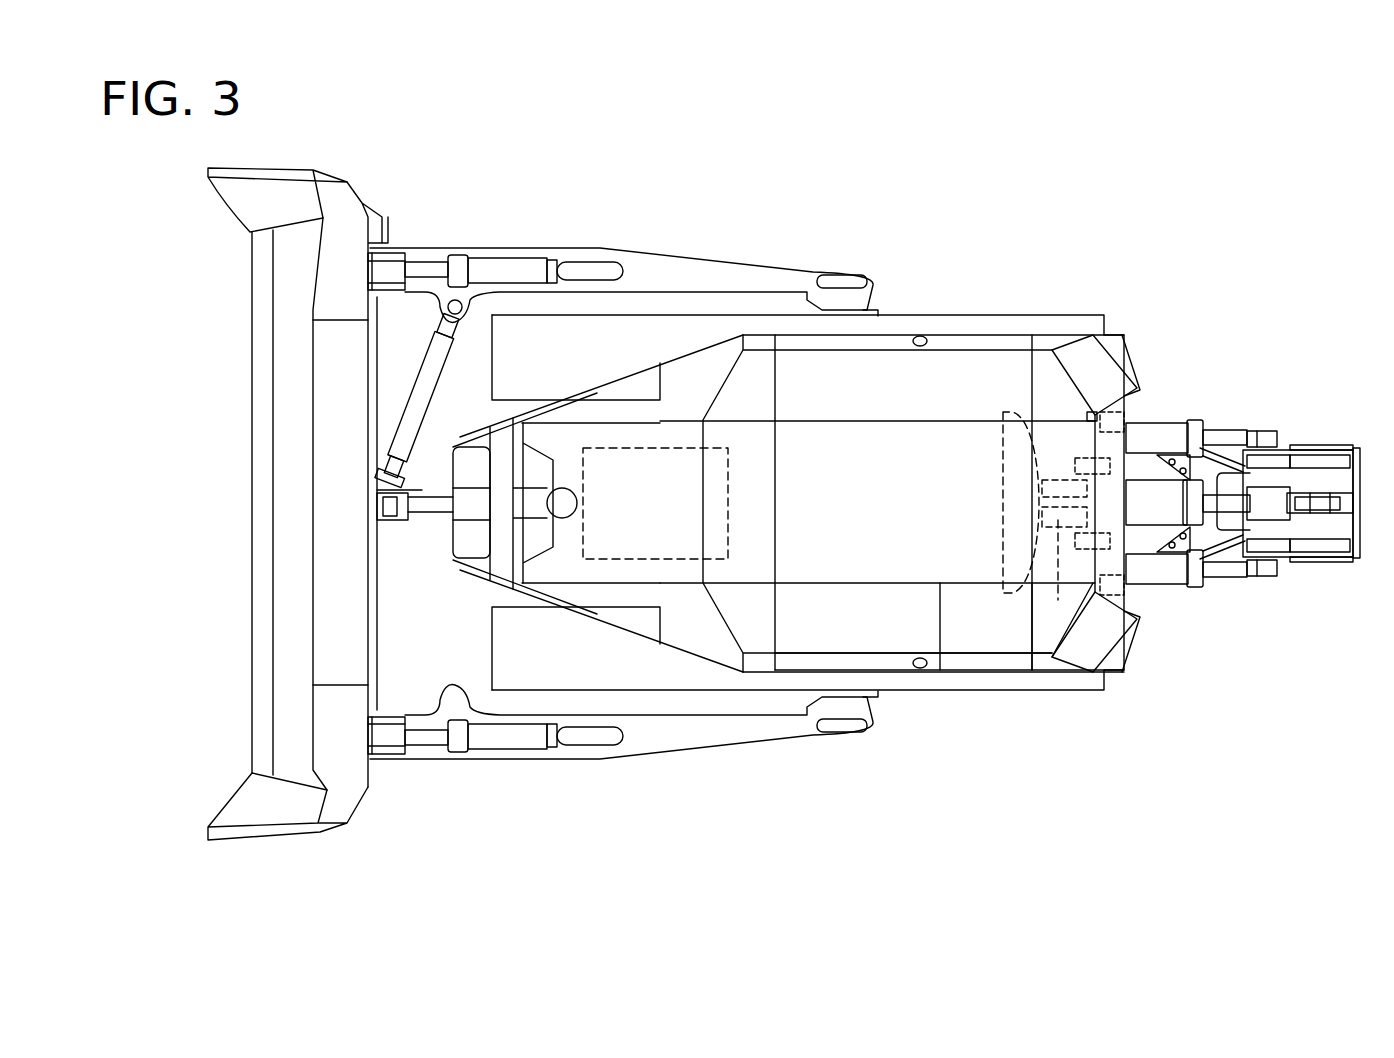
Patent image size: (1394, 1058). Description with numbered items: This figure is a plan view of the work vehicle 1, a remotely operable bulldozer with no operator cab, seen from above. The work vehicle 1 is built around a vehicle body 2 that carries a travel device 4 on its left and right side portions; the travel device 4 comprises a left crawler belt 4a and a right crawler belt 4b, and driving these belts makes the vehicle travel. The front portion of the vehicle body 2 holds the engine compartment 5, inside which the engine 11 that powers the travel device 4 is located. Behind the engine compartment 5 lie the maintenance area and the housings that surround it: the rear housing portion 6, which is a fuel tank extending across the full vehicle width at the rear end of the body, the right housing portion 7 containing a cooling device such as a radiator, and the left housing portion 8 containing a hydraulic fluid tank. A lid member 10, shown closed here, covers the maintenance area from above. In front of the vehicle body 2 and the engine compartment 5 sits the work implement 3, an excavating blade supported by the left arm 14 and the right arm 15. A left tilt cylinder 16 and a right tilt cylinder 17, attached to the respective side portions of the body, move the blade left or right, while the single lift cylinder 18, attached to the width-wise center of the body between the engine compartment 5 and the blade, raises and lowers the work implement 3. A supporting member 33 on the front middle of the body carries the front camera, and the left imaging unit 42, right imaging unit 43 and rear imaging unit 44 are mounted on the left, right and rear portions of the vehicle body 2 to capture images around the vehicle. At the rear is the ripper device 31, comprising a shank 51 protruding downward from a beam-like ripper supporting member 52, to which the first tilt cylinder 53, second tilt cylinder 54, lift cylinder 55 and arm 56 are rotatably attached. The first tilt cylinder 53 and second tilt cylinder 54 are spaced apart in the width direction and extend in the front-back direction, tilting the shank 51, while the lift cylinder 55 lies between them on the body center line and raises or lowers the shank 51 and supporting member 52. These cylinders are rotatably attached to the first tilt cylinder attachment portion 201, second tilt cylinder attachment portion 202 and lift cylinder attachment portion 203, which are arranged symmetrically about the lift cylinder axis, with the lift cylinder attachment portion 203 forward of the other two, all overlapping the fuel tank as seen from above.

The work vehicle 1 is at (816, 484).
The vehicle body 2 is at (958, 706).
The work implement 3 is at (245, 368).
The travel device 4 is at (553, 494).
The crawler belt 4a is at (655, 665).
The crawler belt 4b is at (605, 345).
The engine compartment 5 is at (661, 397).
The rear housing portion 6 is at (1048, 620).
The right housing portion 7 is at (1005, 373).
The left housing portion 8 is at (892, 628).
The lid member 10 is at (960, 473).
The engine 11 is at (690, 450).
The left arm 14 is at (765, 720).
The right arm 15 is at (746, 282).
The left tilt cylinder 16 is at (512, 737).
The right tilt cylinder 17 is at (512, 268).
The lift cylinder 18 is at (563, 496).
The ripper device 31 is at (1253, 504).
The supporting member 33 is at (459, 568).
The left imaging unit 42 is at (920, 668).
The right imaging unit 43 is at (918, 336).
The rear imaging unit 44 is at (1080, 535).
The shank 51 is at (1325, 452).
The ripper supporting member 52 is at (1320, 527).
The first tilt cylinder 53 is at (1172, 577).
The second tilt cylinder 54 is at (1173, 443).
The lift cylinder 55 is at (1172, 507).
The arm 56 is at (1223, 577).
The first tilt cylinder attachment portion 201 is at (1130, 572).
The second tilt cylinder attachment portion 202 is at (1112, 430).
The lift cylinder attachment portion 203 is at (1058, 600).